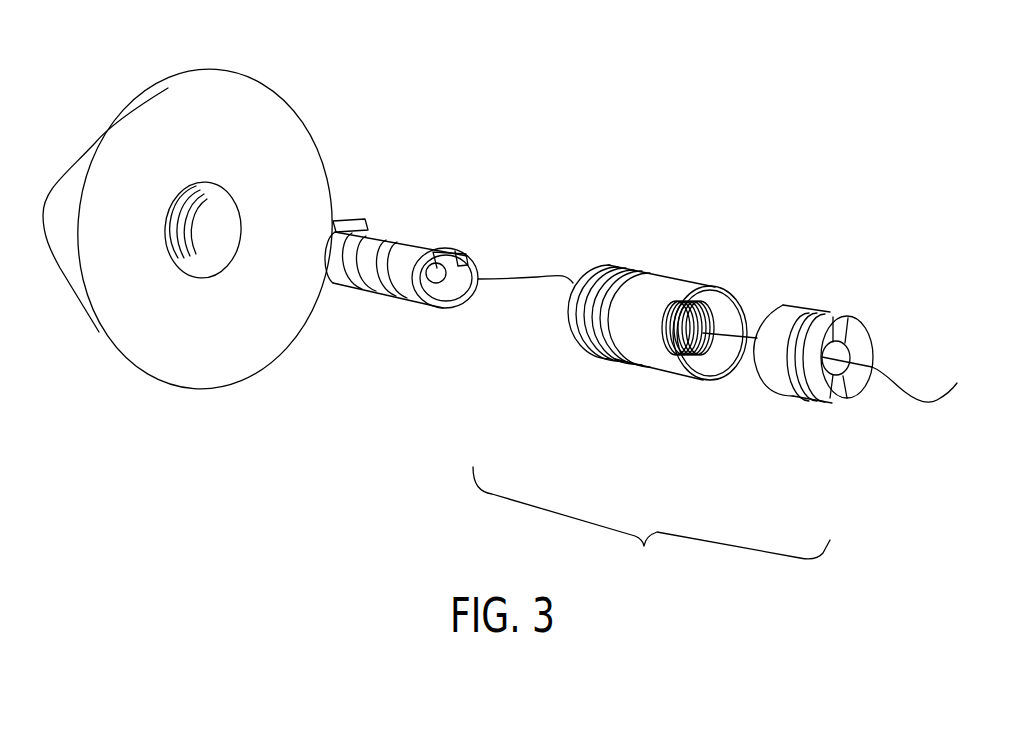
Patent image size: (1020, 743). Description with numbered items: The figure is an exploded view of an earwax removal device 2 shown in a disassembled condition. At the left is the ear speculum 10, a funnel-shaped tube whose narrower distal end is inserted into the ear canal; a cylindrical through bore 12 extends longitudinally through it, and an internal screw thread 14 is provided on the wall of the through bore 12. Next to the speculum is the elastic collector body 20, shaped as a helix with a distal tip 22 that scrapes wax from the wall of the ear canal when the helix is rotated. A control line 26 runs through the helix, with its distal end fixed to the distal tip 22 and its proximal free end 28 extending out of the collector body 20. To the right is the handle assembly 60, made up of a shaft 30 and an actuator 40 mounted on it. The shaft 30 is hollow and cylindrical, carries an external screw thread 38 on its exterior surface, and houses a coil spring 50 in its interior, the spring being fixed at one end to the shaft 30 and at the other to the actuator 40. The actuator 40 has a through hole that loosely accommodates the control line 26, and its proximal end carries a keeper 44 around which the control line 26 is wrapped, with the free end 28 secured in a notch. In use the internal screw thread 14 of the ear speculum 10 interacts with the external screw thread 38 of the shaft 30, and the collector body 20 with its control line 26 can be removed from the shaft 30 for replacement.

The earwax removal device 2 is at (620, 71).
The ear speculum 10 is at (187, 372).
The through bore 12 is at (197, 183).
The internal screw thread 14 is at (195, 220).
The collector body 20 is at (373, 282).
The distal tip 22 is at (353, 226).
The control line 26 is at (537, 277).
The free end 28 is at (930, 403).
The shaft 30 is at (653, 360).
The external screw thread 38 is at (615, 268).
The actuator 40 is at (778, 383).
The keeper 44 is at (850, 328).
The coil spring 50 is at (698, 307).
The handle assembly 60 is at (651, 527).